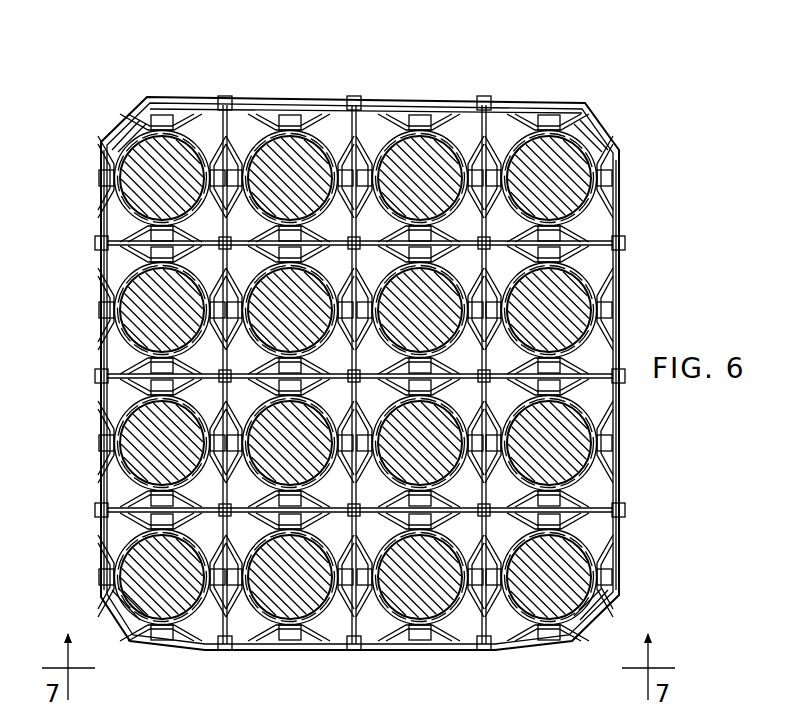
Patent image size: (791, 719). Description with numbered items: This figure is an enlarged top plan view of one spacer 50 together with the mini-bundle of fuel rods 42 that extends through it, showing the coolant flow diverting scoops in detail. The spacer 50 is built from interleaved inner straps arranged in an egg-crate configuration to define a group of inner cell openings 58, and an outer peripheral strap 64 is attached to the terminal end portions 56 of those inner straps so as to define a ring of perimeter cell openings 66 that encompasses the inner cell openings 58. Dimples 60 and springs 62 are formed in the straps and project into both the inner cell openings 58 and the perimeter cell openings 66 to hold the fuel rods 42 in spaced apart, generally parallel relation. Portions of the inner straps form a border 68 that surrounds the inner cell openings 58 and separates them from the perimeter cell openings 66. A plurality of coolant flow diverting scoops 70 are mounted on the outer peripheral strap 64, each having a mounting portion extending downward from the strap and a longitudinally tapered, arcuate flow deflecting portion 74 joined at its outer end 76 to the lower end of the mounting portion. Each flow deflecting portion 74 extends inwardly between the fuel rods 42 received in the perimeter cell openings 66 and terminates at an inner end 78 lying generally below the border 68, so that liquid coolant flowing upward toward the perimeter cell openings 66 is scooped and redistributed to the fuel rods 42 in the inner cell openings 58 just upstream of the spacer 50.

The fuel rod 42 is at (302, 165).
The spacer 50 is at (614, 100).
The terminal end portion 56 is at (619, 515).
The inner cell opening 58 is at (384, 501).
The dimple 60 is at (600, 192).
The spring 62 is at (562, 98).
The outer peripheral strap 64 is at (472, 145).
The perimeter cell opening 66 is at (199, 279).
The border 68 is at (397, 196).
The coolant flow diverting scoop 70 is at (183, 125).
The coolant flow deflecting portion 74 is at (462, 96).
The outer end 76 is at (240, 106).
The inner end 78 is at (364, 534).